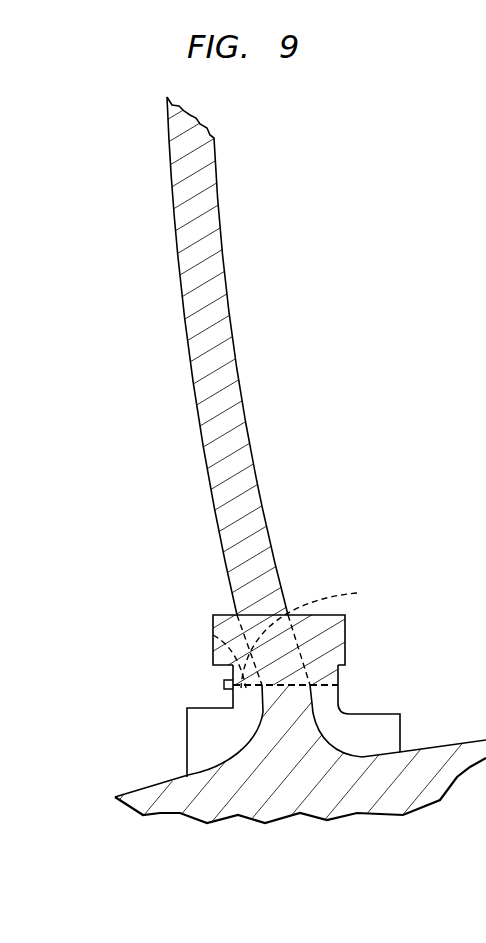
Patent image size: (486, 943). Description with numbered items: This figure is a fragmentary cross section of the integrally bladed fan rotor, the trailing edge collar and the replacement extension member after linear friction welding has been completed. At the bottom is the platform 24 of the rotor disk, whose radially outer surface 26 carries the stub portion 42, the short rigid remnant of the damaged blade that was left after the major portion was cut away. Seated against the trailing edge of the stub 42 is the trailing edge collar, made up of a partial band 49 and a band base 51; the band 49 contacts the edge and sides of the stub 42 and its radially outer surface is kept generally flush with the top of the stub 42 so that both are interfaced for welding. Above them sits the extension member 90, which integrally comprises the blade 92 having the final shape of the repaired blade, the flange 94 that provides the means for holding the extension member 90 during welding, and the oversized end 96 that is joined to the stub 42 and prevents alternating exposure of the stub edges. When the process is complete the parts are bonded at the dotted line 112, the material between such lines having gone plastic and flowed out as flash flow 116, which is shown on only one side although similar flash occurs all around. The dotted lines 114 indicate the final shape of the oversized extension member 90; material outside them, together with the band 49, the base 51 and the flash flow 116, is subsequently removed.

The platform 24 is at (153, 800).
The radially outer surface 26 is at (142, 786).
The stub portion 42 is at (282, 738).
The partial band 49 is at (232, 702).
The band base 51 is at (187, 745).
The extension member 90 is at (163, 140).
The blade 92 is at (175, 221).
The flange 94 is at (347, 630).
The end 96 is at (340, 675).
The dotted line 112 is at (213, 635).
The dotted lines 114 is at (352, 594).
The flash flow 116 is at (224, 683).